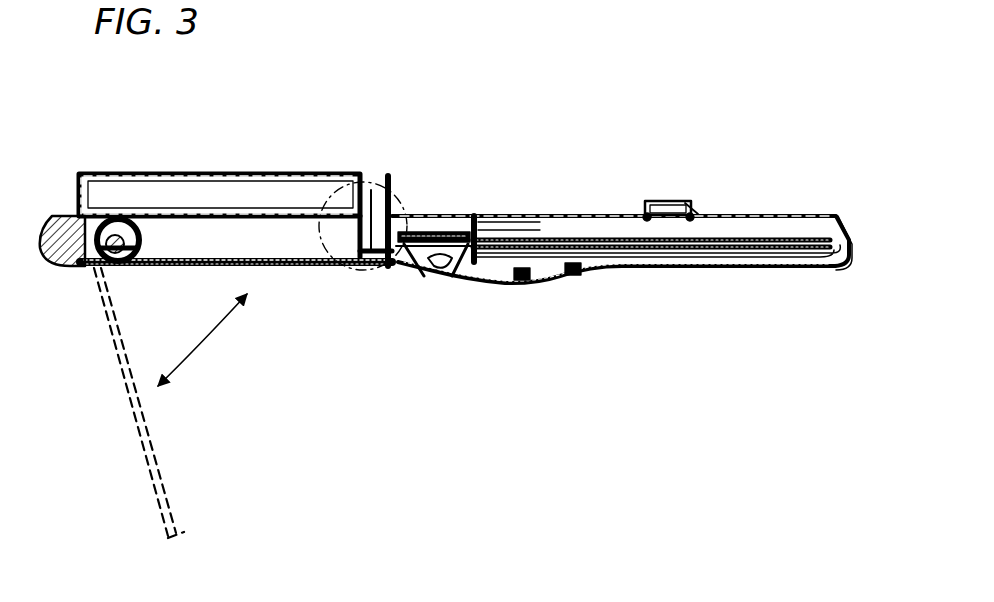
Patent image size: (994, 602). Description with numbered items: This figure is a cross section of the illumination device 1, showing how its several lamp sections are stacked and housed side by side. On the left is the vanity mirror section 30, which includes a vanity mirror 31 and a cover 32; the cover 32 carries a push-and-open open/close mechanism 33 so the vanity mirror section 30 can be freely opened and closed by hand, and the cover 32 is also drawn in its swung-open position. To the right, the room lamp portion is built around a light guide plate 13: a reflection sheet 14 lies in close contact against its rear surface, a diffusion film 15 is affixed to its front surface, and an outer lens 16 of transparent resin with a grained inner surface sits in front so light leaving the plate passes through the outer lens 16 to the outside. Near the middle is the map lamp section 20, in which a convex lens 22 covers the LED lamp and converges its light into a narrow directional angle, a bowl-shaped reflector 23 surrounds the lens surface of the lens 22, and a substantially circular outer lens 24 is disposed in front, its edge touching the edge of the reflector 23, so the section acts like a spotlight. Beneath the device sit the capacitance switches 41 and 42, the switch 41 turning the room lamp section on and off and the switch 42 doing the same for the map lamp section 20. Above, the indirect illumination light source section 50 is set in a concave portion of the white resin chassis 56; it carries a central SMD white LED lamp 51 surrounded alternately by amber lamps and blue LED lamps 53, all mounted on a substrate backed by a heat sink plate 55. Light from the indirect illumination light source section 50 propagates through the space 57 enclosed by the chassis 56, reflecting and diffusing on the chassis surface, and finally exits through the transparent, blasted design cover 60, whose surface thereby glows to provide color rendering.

The illumination device 1 is at (86, 126).
The light guide plate 13 is at (748, 262).
The reflection sheet 14 is at (779, 238).
The diffusion film 15 is at (786, 258).
The outer lens 16 is at (668, 268).
The map lamp section 20 is at (452, 322).
The lens 22 is at (440, 276).
The reflector 23 is at (432, 274).
The outer lens 24 is at (448, 278).
The vanity mirror section 30 is at (216, 356).
The vanity mirror 31 is at (292, 268).
The cover 32 is at (150, 270).
The open/close mechanism 33 is at (360, 278).
The switch 41 is at (574, 280).
The switch 42 is at (521, 285).
The indirect illumination light source section 50 is at (660, 174).
The LED lamp 51 is at (674, 204).
The blue LED lamps 53 is at (642, 214).
The heat sink plate 55 is at (694, 210).
The chassis 56 is at (546, 213).
The space 57 is at (510, 213).
The design cover 60 is at (848, 270).